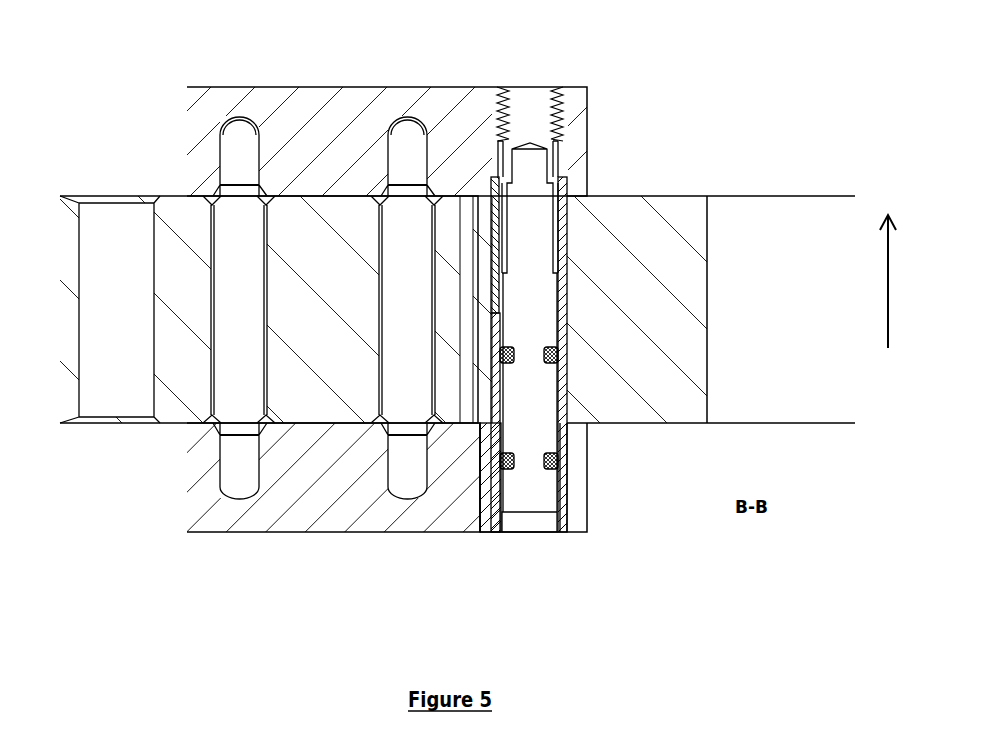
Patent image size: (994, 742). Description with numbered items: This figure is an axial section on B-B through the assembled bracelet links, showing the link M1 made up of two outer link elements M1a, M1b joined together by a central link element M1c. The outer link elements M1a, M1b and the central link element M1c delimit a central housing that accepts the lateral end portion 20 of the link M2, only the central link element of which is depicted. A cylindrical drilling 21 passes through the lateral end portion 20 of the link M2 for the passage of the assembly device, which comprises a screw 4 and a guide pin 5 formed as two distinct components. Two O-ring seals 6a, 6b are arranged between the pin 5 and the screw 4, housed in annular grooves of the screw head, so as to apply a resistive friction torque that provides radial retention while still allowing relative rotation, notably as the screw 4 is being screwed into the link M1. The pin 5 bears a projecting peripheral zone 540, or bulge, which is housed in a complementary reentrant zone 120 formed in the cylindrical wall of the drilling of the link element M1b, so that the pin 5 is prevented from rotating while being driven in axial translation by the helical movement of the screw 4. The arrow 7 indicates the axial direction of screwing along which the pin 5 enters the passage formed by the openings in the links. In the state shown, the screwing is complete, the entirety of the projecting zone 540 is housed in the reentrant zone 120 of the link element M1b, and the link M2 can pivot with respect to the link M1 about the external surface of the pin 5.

The outer link element M1a is at (335, 105).
The outer link element M1b is at (298, 517).
The central link element M1c is at (163, 418).
The central link M2 is at (608, 195).
The lateral end portion 20 is at (477, 237).
The cylindrical drilling 21 is at (568, 277).
The arrow 7 is at (888, 325).
The reentrant zone 120 is at (478, 522).
The projecting peripheral zone 540 is at (490, 522).
The screw 4 is at (547, 495).
The guide pin 5 is at (563, 433).
The O-ring seal 6a is at (555, 357).
The O-ring seal 6b is at (555, 462).